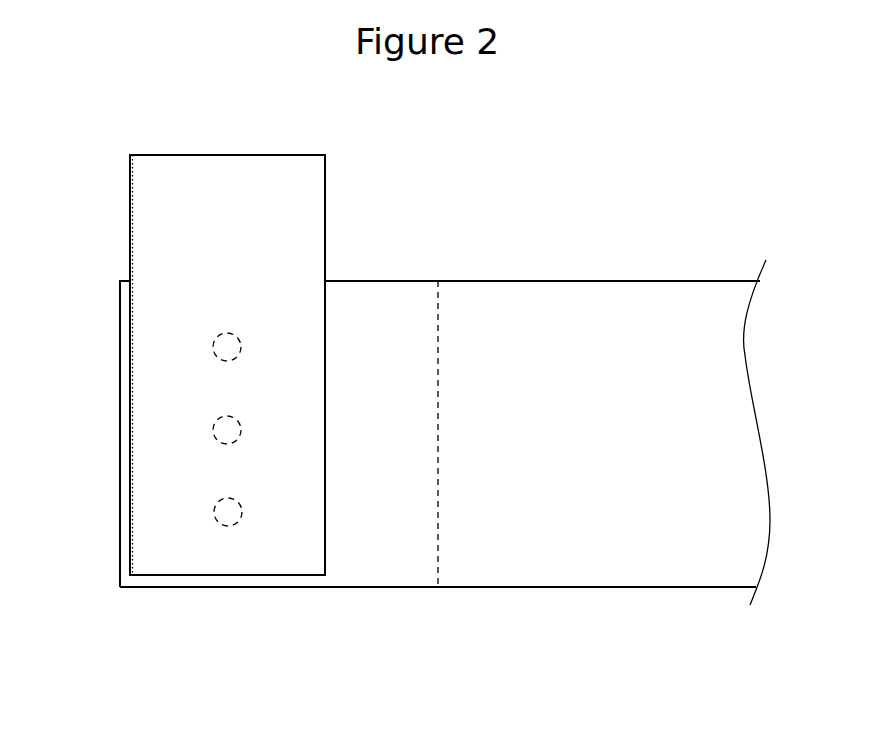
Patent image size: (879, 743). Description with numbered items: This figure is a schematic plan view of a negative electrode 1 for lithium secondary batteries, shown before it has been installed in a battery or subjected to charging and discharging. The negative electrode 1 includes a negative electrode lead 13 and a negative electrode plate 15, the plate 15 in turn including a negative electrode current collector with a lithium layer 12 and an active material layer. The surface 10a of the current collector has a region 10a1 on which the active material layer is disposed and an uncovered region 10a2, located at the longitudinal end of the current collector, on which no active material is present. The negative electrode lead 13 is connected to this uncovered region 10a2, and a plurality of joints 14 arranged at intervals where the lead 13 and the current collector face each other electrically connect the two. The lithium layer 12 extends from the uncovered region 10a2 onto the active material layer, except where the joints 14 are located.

The negative electrode for lithium secondary batteries 1 is at (130, 138).
The lithium layer 12 is at (394, 313).
The negative electrode lead 13 is at (283, 155).
The joints 14 is at (236, 522).
The negative electrode plate 15 is at (120, 436).
The surface of the negative electrode current collector 10a is at (496, 686).
The region of surface 10a1 is at (493, 590).
The uncovered region 10a2 is at (380, 590).